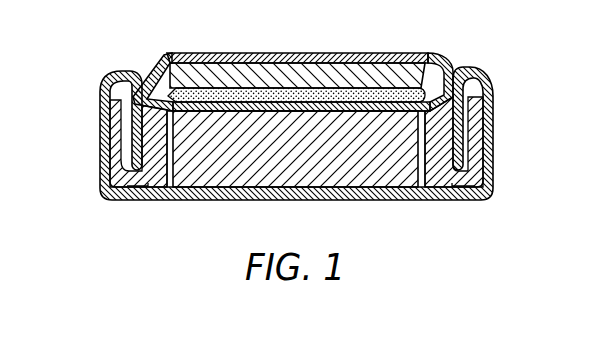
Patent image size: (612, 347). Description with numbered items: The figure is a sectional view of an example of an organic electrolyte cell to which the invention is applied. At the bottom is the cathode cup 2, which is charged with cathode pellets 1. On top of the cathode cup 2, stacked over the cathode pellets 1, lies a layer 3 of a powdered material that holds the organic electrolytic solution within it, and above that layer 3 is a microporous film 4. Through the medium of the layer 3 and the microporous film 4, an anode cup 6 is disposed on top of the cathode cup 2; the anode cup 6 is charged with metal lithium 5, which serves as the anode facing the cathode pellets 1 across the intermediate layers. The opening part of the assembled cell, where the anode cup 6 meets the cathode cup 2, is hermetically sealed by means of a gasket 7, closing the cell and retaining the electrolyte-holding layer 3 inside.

The cathode pellets 1 is at (365, 183).
The cathode cup 2 is at (100, 146).
The layer of powdered material 3 is at (358, 83).
The microporous film 4 is at (215, 110).
The metal lithium 5 is at (313, 66).
The anode cup 6 is at (185, 53).
The gasket 7 is at (128, 182).